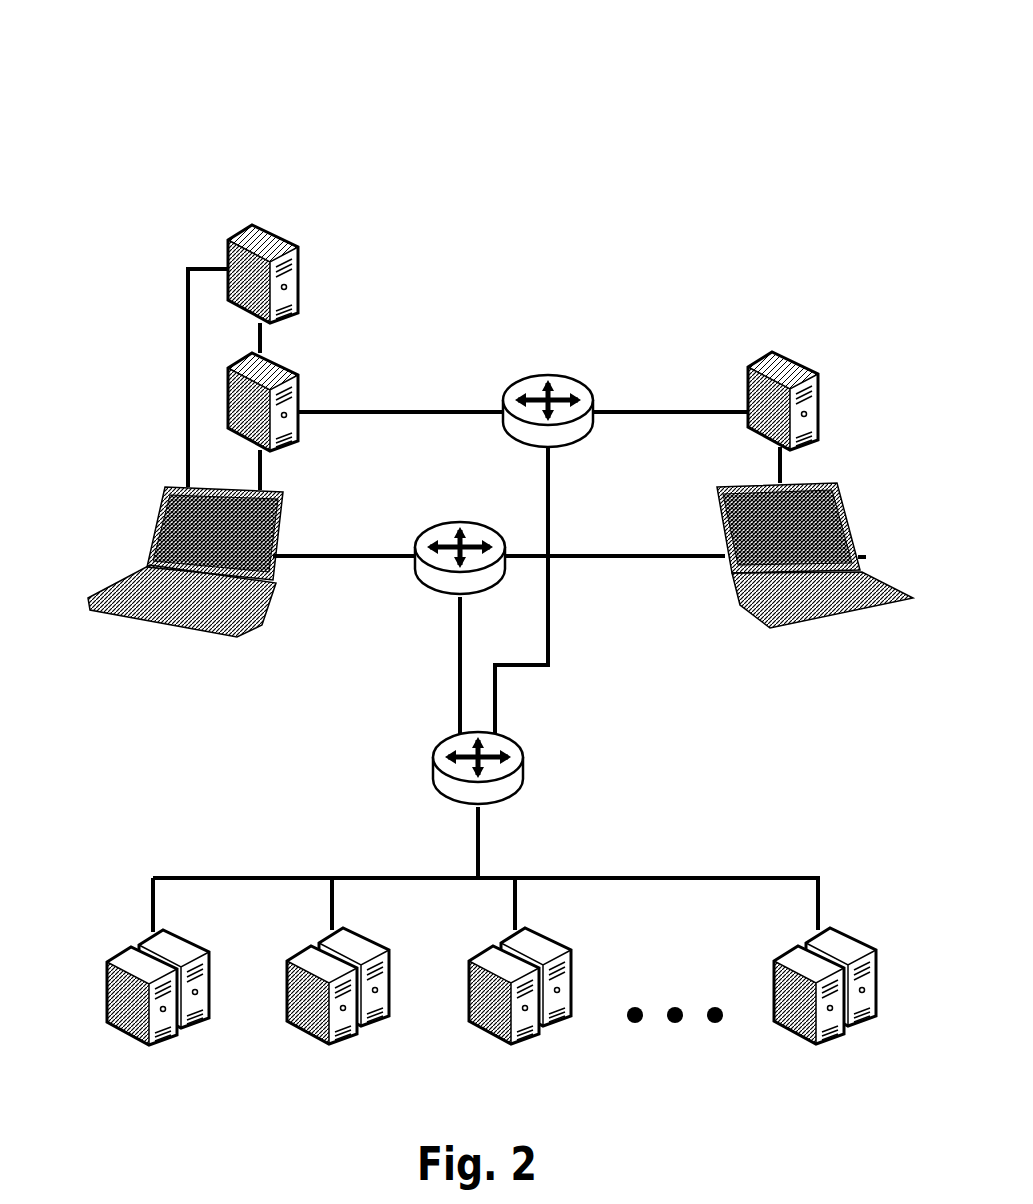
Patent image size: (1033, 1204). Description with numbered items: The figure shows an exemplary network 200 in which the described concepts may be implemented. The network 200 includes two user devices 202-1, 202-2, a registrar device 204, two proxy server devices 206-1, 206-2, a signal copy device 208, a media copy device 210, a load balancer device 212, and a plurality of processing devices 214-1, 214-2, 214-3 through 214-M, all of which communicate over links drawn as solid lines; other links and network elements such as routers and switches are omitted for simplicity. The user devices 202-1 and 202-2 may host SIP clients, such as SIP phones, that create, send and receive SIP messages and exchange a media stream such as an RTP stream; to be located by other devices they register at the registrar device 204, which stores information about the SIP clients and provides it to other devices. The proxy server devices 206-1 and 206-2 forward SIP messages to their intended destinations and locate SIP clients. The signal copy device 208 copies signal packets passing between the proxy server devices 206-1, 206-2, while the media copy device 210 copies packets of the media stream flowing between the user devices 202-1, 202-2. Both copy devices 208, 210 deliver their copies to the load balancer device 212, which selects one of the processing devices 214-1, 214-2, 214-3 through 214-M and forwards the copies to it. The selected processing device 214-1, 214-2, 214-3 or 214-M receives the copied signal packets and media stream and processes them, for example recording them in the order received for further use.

The network 200 is at (477, 72).
The user device 202-1 is at (158, 510).
The user device 202-2 is at (825, 490).
The registrar device 204 is at (272, 262).
The proxy server device 206-1 is at (298, 378).
The proxy server device 206-2 is at (775, 352).
The signal copy device 208 is at (548, 375).
The media copy device 210 is at (458, 520).
The load balancer device 212 is at (433, 763).
The processing device 214-1 is at (106, 985).
The processing device 214-2 is at (286, 985).
The processing device 214-3 is at (469, 975).
The processing device 214-M is at (774, 980).